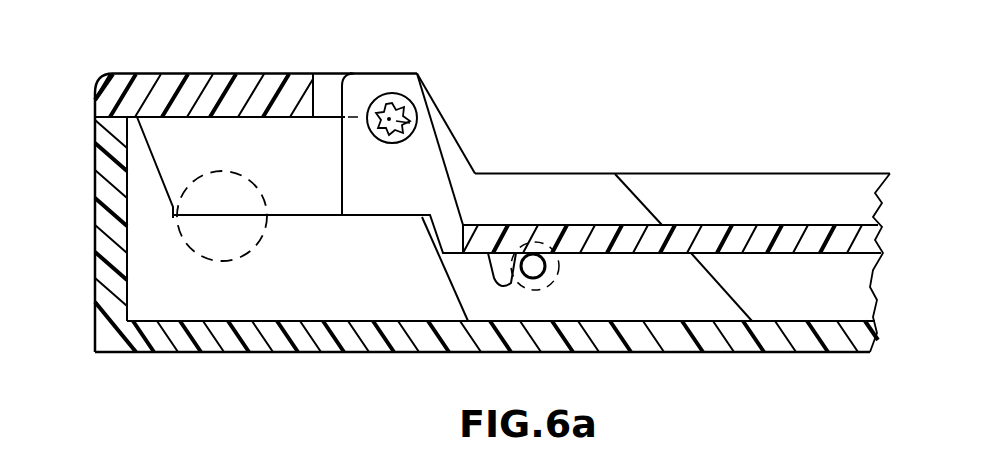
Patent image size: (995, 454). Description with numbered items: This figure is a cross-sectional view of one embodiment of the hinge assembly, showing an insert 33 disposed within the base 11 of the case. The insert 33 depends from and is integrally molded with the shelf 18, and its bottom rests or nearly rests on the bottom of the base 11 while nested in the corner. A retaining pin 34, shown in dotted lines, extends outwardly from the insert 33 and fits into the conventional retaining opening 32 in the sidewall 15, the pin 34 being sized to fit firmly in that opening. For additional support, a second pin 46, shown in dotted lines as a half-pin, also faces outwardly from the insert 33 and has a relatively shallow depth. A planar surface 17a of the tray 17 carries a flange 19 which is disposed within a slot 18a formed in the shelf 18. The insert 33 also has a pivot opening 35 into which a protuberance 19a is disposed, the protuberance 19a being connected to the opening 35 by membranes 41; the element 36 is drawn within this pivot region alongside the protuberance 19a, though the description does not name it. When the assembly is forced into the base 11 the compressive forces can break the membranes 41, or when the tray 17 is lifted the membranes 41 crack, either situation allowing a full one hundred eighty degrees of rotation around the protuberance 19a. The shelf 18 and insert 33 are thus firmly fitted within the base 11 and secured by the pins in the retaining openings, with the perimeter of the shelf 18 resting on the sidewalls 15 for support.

The base 11 is at (88, 221).
The sidewall 15 is at (686, 173).
The tray 17 is at (804, 238).
The planar surface 17a is at (743, 225).
The shelf 18 is at (215, 72).
The slot 18a is at (323, 74).
The flange 19 is at (352, 74).
The protuberance 19a is at (388, 108).
The retaining opening 32 is at (558, 271).
The insert 33 is at (497, 187).
The retaining pin 34 is at (520, 284).
The pivot opening 35 is at (409, 117).
The star-shaped drive 36 is at (398, 74).
The membranes 41 is at (412, 123).
The second pin 46 is at (263, 208).